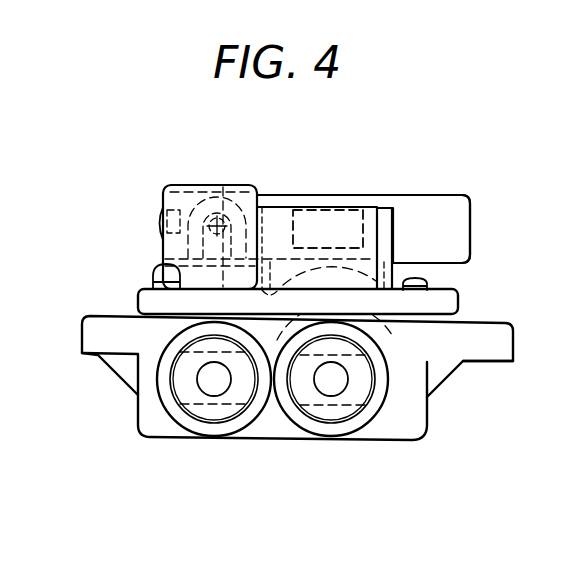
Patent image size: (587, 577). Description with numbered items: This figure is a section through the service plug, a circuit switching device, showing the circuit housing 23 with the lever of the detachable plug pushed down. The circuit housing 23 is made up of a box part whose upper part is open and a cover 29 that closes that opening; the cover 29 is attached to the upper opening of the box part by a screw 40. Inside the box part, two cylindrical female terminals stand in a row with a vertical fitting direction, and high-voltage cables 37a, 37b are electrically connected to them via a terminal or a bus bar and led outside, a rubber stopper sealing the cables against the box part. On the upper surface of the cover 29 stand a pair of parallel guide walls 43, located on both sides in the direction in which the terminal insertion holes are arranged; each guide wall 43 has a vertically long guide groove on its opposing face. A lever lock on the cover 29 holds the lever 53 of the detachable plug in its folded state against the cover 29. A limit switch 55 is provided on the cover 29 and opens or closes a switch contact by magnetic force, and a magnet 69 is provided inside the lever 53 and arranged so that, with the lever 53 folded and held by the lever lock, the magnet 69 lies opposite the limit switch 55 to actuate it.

The circuit housing 23 is at (428, 412).
The cover 29 is at (458, 302).
The high-voltage cable 37a is at (211, 389).
The high-voltage cable 37b is at (332, 392).
The screw 40 is at (153, 279).
The guide wall 43 is at (187, 186).
The lever 53 is at (460, 201).
The limit switch 55 is at (388, 208).
The magnet 69 is at (335, 208).